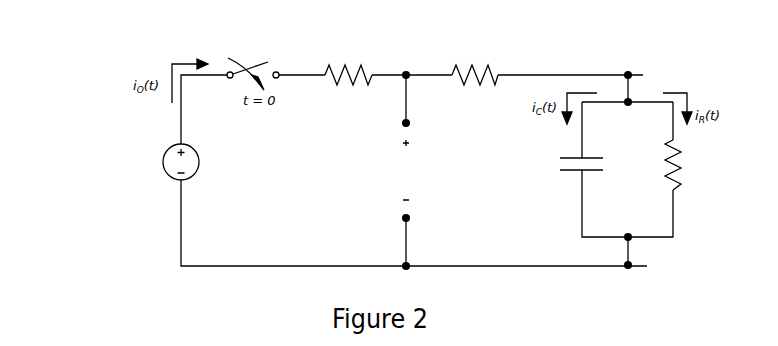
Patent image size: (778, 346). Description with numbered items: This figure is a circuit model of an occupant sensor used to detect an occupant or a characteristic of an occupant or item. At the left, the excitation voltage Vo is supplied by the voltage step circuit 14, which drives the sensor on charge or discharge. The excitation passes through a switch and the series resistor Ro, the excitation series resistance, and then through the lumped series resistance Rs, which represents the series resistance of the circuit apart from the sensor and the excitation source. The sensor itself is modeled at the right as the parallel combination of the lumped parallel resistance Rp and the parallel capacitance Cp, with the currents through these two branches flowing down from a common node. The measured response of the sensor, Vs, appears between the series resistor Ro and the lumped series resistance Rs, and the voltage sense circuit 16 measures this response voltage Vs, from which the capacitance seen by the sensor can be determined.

The voltage step circuit 14 is at (113, 167).
The voltage sense circuit 16 is at (372, 182).
The series resistor Ro is at (348, 86).
The lumped series resistance Rs is at (475, 86).
The parallel capacitance Cp is at (591, 170).
The lumped parallel resistance Rp is at (682, 165).